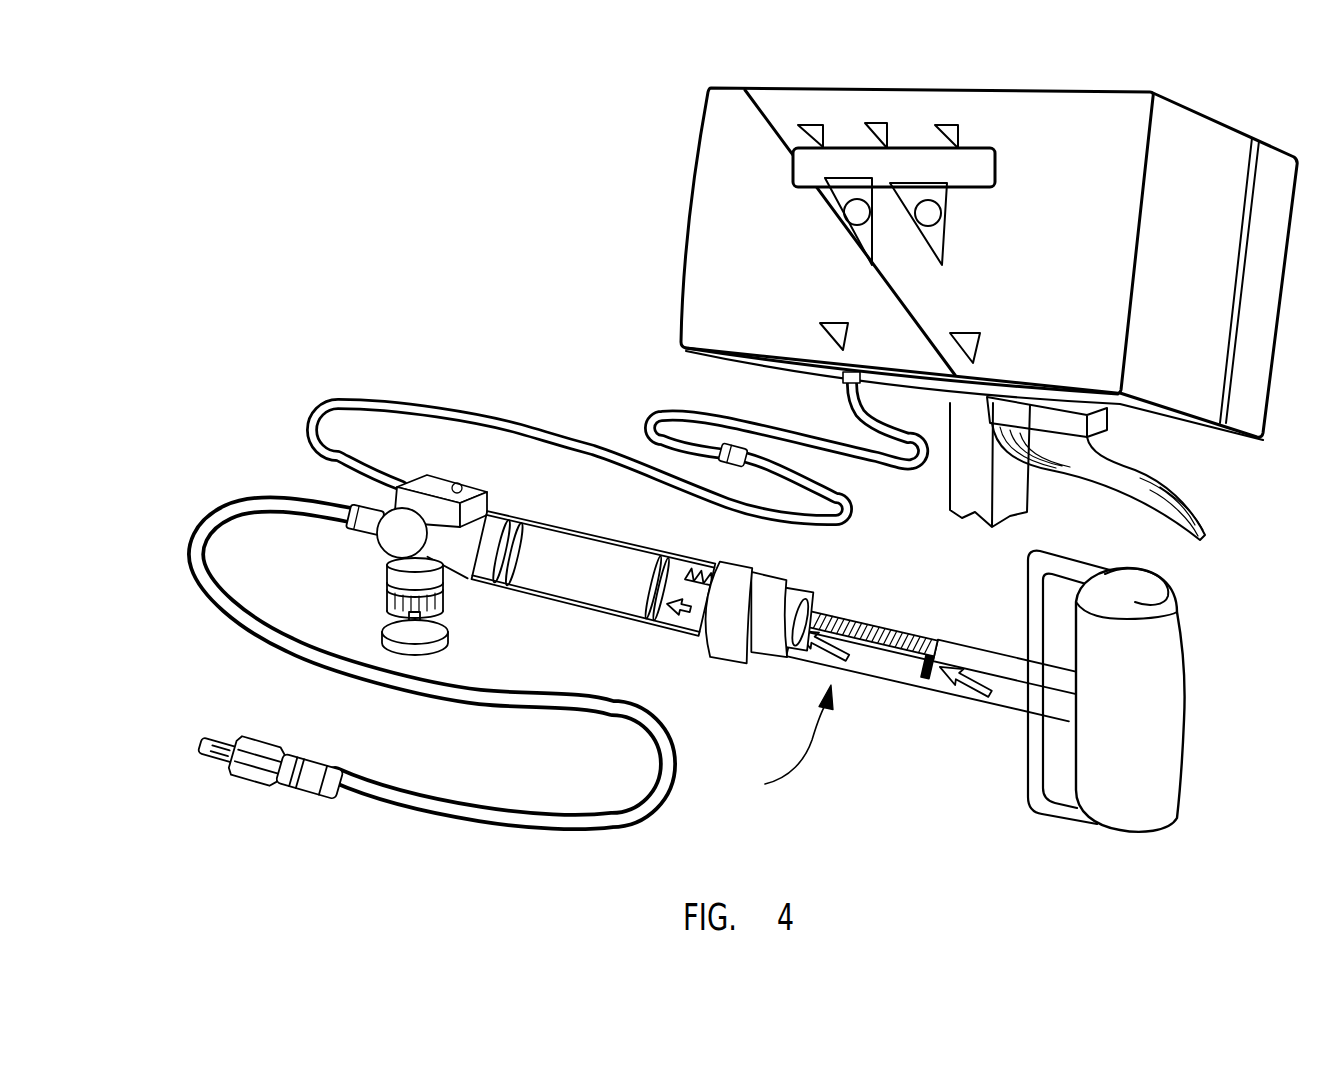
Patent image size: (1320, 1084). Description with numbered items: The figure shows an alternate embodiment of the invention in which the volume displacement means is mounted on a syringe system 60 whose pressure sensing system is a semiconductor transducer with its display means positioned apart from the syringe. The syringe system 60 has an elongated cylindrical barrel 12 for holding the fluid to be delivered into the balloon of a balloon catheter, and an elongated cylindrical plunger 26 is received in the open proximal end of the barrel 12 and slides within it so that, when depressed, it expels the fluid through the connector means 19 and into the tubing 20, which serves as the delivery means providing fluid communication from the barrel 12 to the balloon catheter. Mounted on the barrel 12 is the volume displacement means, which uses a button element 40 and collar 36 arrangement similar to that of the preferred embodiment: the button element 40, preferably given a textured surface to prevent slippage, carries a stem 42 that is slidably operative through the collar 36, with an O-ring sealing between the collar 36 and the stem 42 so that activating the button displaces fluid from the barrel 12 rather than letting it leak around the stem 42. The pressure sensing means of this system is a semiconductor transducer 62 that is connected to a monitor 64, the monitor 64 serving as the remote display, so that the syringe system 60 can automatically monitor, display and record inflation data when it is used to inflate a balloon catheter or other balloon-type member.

The barrel 12 is at (626, 622).
The connector means 19 is at (253, 790).
The tubing 20 is at (237, 613).
The plunger 26 is at (1018, 685).
The collar 36 is at (445, 602).
The button element 40 is at (430, 633).
The stem 42 is at (410, 620).
The syringe system 60 is at (783, 744).
The semiconductor transducer 62 is at (437, 480).
The monitor 64 is at (692, 250).